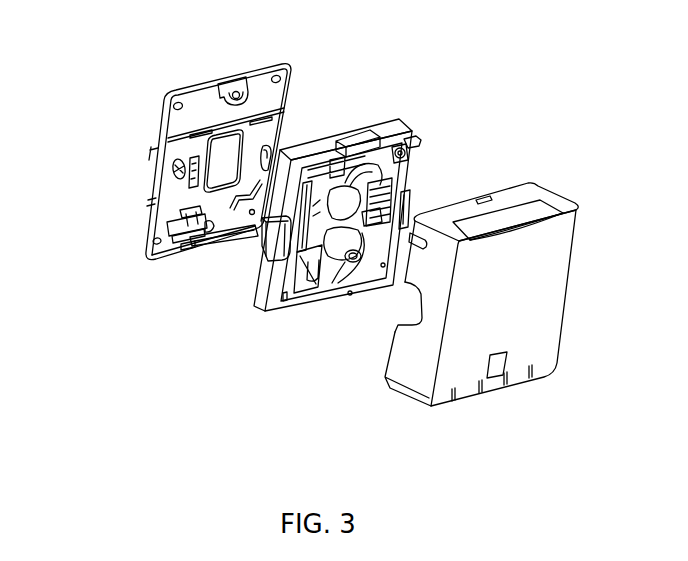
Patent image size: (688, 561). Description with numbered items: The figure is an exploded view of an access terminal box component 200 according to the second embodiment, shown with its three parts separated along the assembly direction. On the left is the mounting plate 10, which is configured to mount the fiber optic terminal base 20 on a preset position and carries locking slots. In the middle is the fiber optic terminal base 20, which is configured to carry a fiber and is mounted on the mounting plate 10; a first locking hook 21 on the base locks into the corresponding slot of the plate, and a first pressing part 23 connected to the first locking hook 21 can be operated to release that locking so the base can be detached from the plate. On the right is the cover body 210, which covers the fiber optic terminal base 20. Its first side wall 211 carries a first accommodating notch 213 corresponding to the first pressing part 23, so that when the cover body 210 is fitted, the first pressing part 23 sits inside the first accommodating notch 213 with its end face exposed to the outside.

The access terminal box component 200 is at (430, 30).
The mounting plate 10 is at (143, 228).
The fiber optic terminal base 20 is at (292, 318).
The first locking hook 21 is at (255, 238).
The first pressing part 23 is at (275, 241).
The cover body 210 is at (447, 405).
The first side wall 211 is at (405, 363).
The first accommodating notch 213 is at (408, 308).